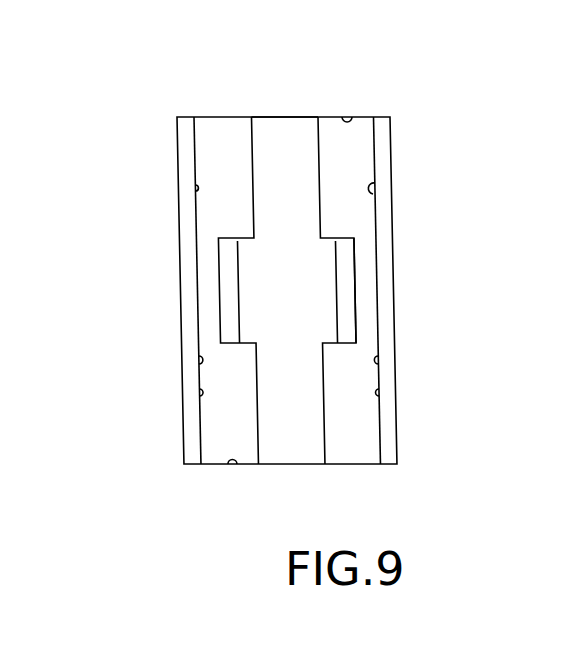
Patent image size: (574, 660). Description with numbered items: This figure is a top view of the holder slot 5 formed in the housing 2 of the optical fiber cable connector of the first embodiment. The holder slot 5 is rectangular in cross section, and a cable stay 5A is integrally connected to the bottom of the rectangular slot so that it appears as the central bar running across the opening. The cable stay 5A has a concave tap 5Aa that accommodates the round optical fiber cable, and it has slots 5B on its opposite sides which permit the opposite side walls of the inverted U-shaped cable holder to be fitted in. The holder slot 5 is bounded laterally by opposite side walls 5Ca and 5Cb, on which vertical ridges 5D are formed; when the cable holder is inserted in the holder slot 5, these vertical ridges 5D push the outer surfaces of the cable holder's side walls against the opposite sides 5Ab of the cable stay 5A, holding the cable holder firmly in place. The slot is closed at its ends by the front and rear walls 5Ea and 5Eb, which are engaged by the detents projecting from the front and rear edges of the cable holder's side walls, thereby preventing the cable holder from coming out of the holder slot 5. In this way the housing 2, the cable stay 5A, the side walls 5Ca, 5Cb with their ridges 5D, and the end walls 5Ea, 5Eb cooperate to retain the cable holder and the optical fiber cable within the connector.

The housing 2 is at (177, 160).
The holder slot 5 is at (212, 110).
The cable stay 5A is at (271, 132).
The concave tap 5Aa is at (301, 128).
The opposite sides of the cable stay 5Ab is at (354, 283).
The slots 5B is at (200, 293).
The side wall of the holder slot 5Ca is at (202, 360).
The side wall of the holder slot 5Cb is at (368, 362).
The vertical ridges 5D is at (364, 198).
The front wall of the holder slot 5Ea is at (225, 468).
The rear wall of the holder slot 5Eb is at (350, 115).